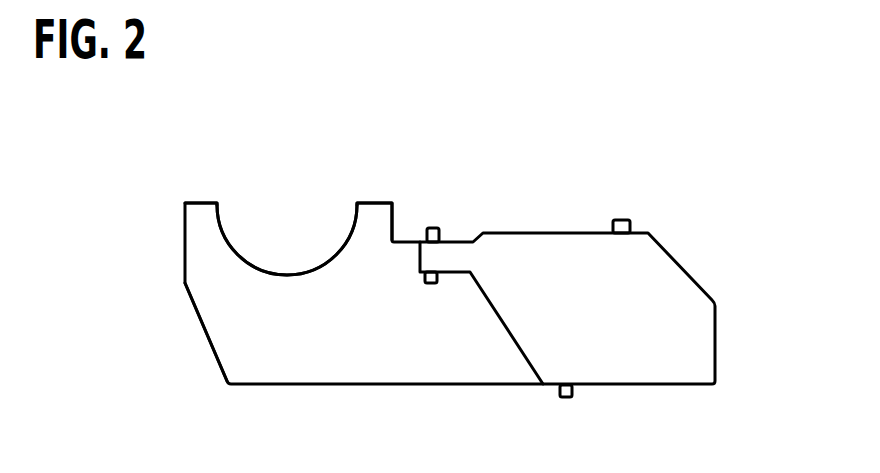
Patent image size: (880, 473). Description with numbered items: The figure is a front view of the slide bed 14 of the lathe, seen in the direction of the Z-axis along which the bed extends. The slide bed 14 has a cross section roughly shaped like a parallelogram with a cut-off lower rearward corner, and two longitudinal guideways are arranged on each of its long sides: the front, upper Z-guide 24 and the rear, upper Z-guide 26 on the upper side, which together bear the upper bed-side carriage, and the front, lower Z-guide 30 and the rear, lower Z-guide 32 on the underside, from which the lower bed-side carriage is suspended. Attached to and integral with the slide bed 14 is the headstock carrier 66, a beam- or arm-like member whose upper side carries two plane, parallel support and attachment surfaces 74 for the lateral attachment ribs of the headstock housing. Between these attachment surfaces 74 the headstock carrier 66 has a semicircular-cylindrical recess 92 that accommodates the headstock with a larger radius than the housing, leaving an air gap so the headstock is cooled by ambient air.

The support and attachment surfaces 74 is at (203, 203).
The recess 92 is at (240, 242).
The slide bed 14 is at (573, 247).
The headstock carrier 66 is at (198, 332).
The front, upper Z-guide 24 is at (446, 219).
The front, lower Z-guide 30 is at (435, 297).
The rear, upper Z-guide 26 is at (640, 214).
The rear, lower Z-guide 32 is at (585, 400).